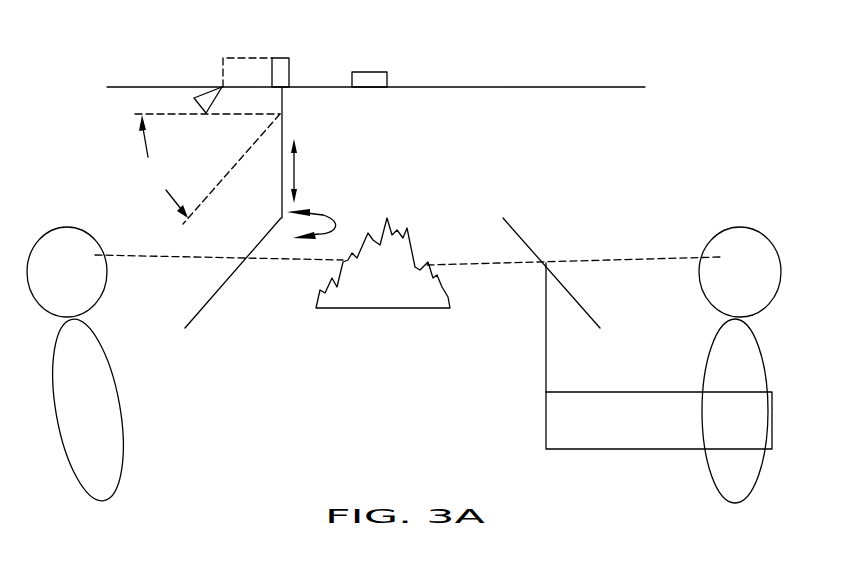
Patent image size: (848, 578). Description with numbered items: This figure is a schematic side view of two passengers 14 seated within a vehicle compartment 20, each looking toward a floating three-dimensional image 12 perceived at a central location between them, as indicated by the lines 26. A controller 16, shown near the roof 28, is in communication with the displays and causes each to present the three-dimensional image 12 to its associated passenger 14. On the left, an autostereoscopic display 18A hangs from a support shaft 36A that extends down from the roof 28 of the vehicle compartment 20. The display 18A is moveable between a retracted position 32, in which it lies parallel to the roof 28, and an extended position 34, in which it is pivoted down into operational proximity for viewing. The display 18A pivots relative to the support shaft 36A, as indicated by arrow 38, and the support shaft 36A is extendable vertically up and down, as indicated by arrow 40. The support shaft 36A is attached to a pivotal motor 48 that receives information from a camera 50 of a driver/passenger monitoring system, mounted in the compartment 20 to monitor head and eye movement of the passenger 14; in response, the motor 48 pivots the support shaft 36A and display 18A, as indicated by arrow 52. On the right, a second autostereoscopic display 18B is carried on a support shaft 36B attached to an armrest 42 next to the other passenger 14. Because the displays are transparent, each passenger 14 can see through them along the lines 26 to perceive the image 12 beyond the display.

The three-dimensional image 12 is at (396, 287).
The passenger 14 is at (100, 422).
The controller 16 is at (375, 80).
The autostereoscopic display 18A is at (190, 323).
The autostereoscopic display 18B is at (590, 323).
The vehicle compartment 20 is at (632, 66).
The lines 26 is at (303, 262).
The roof 28 is at (577, 88).
The retracted position 32 is at (135, 115).
The extended position 34 is at (212, 302).
The support shaft 36A is at (282, 133).
The support shaft 36B is at (546, 365).
The arrow 38 is at (163, 166).
The arrow 40 is at (294, 170).
The armrest 42 is at (671, 434).
The pivotal motor 48 is at (282, 58).
The camera 50 is at (200, 92).
The arrow 52 is at (323, 215).